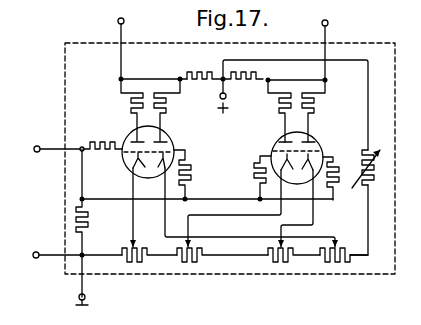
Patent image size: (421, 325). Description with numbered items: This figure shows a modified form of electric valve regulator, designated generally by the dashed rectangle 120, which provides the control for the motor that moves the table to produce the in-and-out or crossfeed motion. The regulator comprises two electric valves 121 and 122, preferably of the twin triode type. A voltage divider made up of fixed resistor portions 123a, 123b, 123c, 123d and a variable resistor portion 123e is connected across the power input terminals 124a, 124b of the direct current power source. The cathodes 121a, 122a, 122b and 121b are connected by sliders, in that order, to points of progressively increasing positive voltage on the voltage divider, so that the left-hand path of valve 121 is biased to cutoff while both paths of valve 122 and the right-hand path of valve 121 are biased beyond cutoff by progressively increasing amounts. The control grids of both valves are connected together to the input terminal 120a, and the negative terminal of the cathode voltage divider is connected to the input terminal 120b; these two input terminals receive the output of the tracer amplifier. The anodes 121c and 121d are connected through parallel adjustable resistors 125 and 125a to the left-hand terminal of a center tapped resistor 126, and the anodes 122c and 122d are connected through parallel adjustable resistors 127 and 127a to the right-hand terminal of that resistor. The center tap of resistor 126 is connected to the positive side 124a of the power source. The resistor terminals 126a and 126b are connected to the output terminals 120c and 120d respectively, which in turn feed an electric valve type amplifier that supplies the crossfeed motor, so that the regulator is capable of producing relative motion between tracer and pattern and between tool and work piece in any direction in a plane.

The electric valve regulator 120 is at (395, 43).
The input terminal 120a is at (37, 146).
The input terminal 120b is at (36, 252).
The output terminal 120c is at (118, 22).
The output terminal 120d is at (328, 24).
The electric valve 121 is at (174, 146).
The cathode 121a is at (132, 166).
The cathode 121b is at (158, 170).
The anode 121c is at (131, 140).
The anode 121d is at (163, 141).
The electric valve 122 is at (320, 153).
The cathode 122a is at (271, 157).
The cathode 122b is at (307, 172).
The anode 122c is at (279, 142).
The anode 122d is at (310, 142).
The fixed resistor portion 123a is at (134, 262).
The fixed resistor portion 123b is at (189, 262).
The fixed resistor portion 123c is at (281, 262).
The fixed resistor portion 123d is at (336, 262).
The variable resistor portion 123e is at (360, 188).
The power input terminal 124a is at (226, 97).
The power input terminal 124b is at (79, 297).
The adjustable resistor 125 is at (131, 104).
The adjustable resistor 125a is at (168, 106).
The center tapped resistor 126 is at (204, 73).
The resistor terminal 126a is at (180, 79).
The resistor terminal 126b is at (268, 80).
The adjustable resistor 127 is at (279, 110).
The adjustable resistor 127a is at (314, 108).